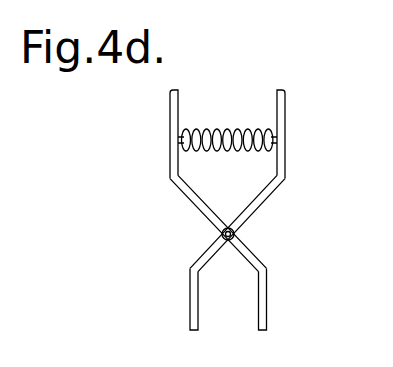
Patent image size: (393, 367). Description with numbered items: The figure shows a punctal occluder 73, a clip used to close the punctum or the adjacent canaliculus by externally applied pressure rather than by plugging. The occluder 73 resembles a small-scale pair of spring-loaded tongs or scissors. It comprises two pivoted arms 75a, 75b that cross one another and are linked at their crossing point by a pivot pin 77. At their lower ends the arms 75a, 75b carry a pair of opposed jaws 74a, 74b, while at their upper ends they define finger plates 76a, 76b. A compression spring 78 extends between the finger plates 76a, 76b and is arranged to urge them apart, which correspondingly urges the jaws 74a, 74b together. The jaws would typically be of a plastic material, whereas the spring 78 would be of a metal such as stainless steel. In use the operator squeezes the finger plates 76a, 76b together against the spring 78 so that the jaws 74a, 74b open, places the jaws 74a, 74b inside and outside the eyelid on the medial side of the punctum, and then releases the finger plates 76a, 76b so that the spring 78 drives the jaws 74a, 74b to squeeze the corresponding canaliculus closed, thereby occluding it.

The punctal occluder 73 is at (306, 159).
The jaw 74a is at (198, 315).
The jaw 74b is at (267, 312).
The pivoted arm 75a is at (257, 207).
The pivoted arm 75b is at (192, 202).
The finger plate 76a is at (286, 102).
The finger plate 76b is at (170, 118).
The pivot pin 77 is at (234, 237).
The compression spring 78 is at (224, 129).